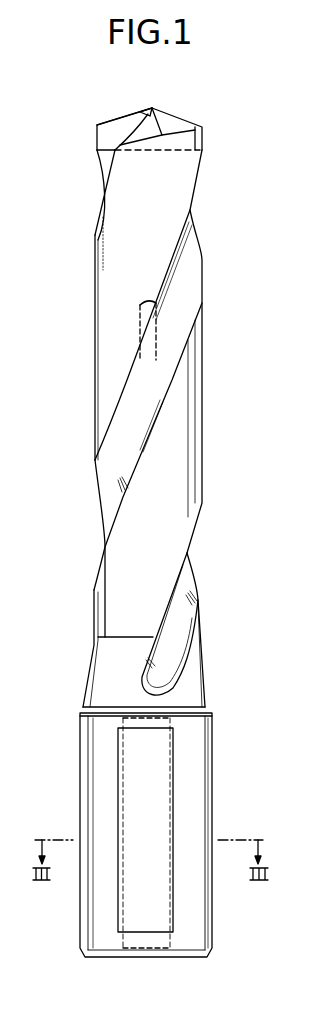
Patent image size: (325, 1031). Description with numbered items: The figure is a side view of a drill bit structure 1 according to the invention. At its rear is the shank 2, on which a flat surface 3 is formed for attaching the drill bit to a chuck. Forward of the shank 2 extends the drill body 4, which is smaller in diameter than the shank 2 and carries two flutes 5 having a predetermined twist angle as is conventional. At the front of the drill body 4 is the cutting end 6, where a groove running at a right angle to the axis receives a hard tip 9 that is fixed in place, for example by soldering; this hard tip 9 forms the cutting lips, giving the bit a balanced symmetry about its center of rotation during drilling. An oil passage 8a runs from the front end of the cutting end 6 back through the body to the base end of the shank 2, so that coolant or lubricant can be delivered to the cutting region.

The drill bit structure 1 is at (232, 378).
The shank 2 is at (100, 768).
The flat surface 3 is at (147, 810).
The drill body 4 is at (200, 460).
The flutes 5 is at (110, 499).
The cutting end 6 is at (214, 127).
The oil passage 8a is at (155, 128).
The hard tip 9 is at (118, 118).